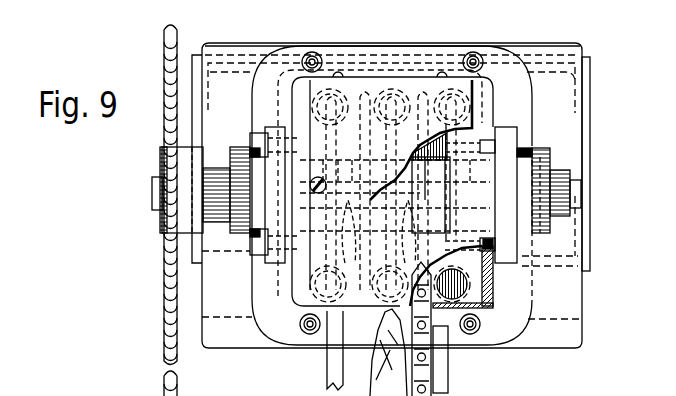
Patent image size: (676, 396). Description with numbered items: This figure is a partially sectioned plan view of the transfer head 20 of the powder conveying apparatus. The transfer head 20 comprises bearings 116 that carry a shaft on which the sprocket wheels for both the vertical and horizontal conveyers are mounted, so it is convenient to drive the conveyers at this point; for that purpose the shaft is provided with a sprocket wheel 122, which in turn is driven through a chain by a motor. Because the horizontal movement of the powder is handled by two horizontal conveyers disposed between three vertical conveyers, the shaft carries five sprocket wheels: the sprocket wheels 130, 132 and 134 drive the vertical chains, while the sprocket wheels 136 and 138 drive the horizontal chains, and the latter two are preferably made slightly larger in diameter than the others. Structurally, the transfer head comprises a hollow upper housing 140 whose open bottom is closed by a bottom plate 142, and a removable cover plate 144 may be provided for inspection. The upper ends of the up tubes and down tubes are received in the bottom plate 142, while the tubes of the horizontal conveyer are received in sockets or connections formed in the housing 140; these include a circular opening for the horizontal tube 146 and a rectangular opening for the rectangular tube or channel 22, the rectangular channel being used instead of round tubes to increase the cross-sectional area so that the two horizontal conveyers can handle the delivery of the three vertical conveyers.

The transfer head 20 is at (533, 113).
The rectangular tube or channel 22 is at (450, 371).
The bearings 116 is at (240, 147).
The sprocket wheel 122 is at (163, 316).
The sprocket wheel 130 is at (325, 95).
The sprocket wheel 132 is at (403, 88).
The sprocket wheel 134 is at (490, 83).
The sprocket wheel 136 is at (365, 93).
The sprocket wheel 138 is at (433, 93).
The hollow upper housing 140 is at (493, 281).
The bottom plate 142 is at (566, 305).
The removable cover plate 144 is at (468, 127).
The horizontal tube 146 is at (347, 366).